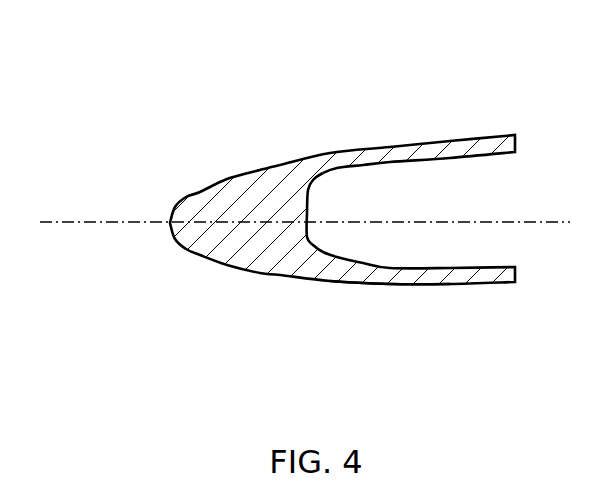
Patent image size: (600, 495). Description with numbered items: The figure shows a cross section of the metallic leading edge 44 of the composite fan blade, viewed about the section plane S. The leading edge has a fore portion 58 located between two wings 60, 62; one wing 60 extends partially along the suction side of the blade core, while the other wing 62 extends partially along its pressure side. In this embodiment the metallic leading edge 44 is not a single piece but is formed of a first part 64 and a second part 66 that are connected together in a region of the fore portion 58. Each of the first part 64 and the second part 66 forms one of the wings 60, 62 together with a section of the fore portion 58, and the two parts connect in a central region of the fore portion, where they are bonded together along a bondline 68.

The probe body 44 is at (342, 216).
The fore portion 58 is at (240, 252).
The wing 60 is at (430, 147).
The wing 62 is at (430, 275).
The first part 64 is at (520, 107).
The second part 66 is at (395, 317).
The bondline 68 is at (270, 224).
The section plane S is at (73, 214).